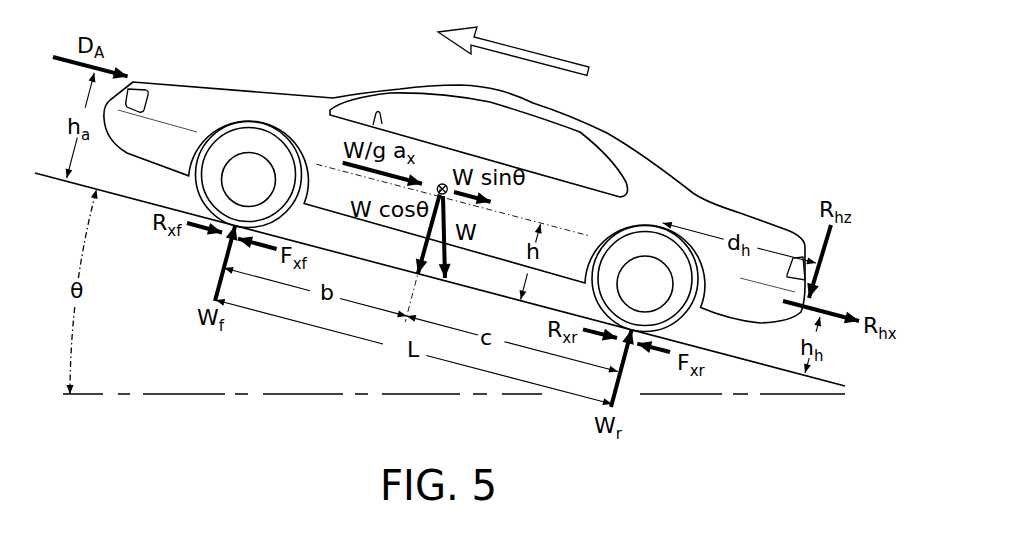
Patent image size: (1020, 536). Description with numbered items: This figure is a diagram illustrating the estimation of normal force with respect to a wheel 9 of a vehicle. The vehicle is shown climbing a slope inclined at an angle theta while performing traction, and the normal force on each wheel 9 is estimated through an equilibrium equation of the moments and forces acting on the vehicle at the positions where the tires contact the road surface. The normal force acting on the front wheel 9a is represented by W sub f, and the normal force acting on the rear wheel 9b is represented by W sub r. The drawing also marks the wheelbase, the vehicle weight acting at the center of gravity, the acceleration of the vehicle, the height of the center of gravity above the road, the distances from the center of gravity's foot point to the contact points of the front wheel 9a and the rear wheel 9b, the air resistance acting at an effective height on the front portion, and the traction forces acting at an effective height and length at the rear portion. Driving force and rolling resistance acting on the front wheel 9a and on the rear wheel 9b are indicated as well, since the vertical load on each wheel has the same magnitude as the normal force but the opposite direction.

The wheel 9 is at (454, 202).
The front wheel 9a is at (258, 138).
The rear wheel 9b is at (638, 226).